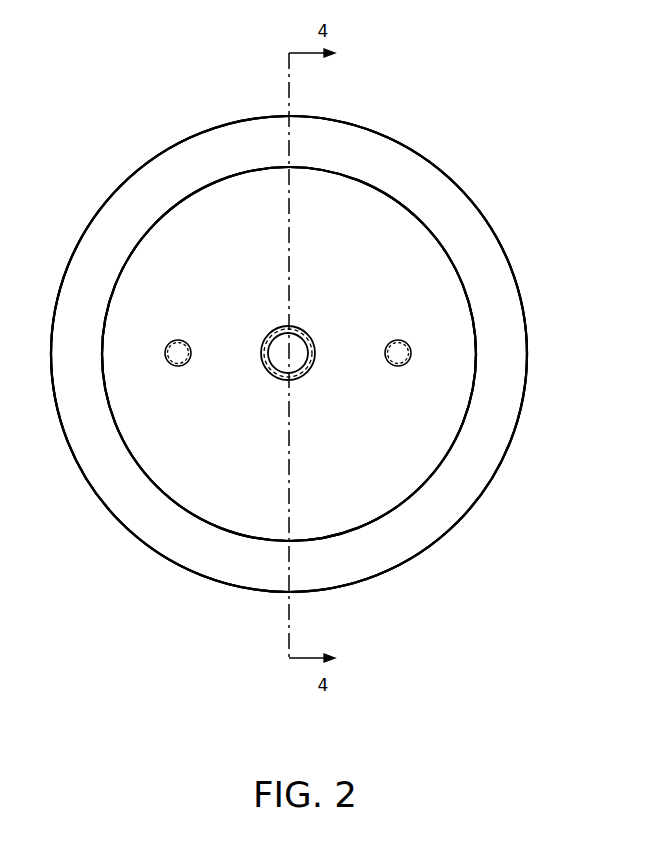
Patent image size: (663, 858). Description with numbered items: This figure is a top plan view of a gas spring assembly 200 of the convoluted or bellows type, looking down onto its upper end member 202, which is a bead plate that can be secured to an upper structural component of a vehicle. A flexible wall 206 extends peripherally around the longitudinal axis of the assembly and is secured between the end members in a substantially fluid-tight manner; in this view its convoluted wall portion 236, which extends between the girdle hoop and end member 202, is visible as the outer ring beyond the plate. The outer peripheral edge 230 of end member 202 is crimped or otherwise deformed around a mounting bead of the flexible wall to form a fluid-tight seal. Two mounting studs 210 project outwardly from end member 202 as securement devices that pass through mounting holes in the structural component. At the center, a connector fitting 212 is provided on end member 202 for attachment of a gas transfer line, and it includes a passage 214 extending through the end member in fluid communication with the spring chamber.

The gas spring assembly 200 is at (404, 126).
The end member 202 is at (222, 192).
The flexible wall 206 is at (459, 210).
The mounting studs 210 is at (190, 349).
The connector fitting 212 is at (259, 378).
The passage 214 is at (303, 344).
The outer peripheral edge 230 is at (127, 260).
The convoluted wall portion 236 is at (470, 516).